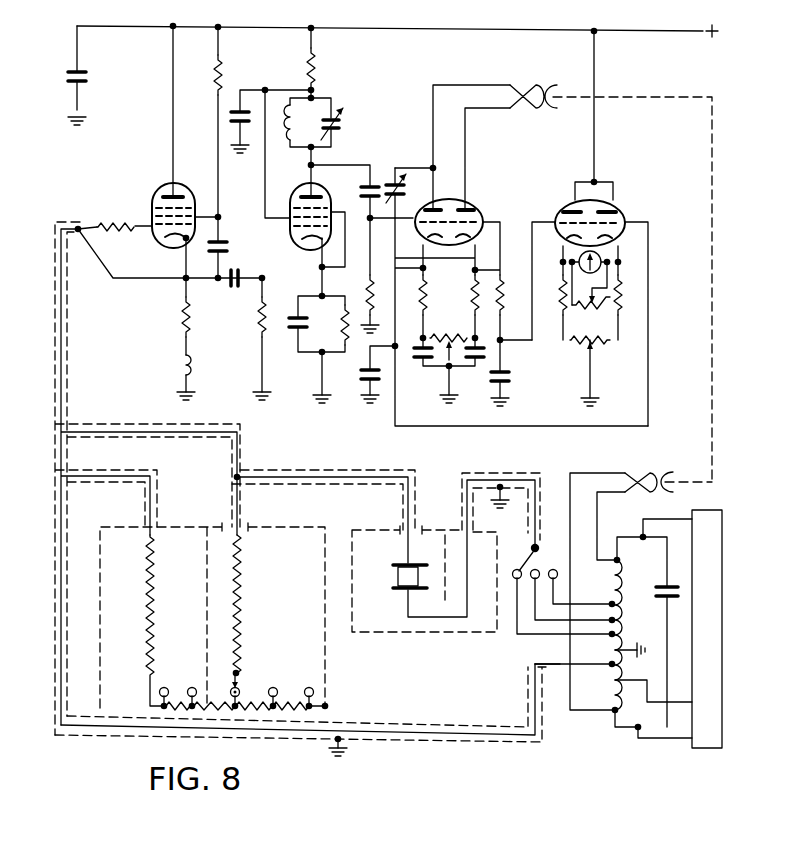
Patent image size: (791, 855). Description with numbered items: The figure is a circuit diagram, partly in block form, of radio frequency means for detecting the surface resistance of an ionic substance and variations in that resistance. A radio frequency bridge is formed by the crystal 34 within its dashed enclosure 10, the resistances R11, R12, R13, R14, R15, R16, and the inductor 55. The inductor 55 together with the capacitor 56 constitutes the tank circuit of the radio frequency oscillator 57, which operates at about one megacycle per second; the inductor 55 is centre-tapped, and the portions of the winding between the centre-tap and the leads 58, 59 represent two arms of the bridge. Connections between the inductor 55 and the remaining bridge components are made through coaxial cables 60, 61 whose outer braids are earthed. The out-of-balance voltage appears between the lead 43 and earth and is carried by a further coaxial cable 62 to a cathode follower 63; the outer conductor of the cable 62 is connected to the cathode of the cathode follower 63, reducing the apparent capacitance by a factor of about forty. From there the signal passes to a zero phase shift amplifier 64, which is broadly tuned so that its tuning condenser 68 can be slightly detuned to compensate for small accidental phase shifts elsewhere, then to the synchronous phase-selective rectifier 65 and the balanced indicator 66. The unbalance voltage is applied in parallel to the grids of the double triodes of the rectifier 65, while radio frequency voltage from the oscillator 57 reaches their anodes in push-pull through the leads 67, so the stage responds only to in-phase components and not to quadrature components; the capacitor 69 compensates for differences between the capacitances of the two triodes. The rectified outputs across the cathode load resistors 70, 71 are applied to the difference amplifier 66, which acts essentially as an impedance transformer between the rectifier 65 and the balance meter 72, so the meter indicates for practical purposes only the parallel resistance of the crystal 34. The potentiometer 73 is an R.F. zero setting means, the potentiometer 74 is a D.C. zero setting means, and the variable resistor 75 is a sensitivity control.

The detector unit (dashed enclosure) 10 is at (387, 633).
The crystal 34 is at (396, 574).
The lead 43 is at (241, 495).
The inductor 55 is at (607, 690).
The capacitor 56 is at (656, 591).
The radio frequency oscillator 57 is at (719, 646).
The lead 58 is at (558, 664).
The lead 59 is at (531, 548).
The coaxial cable 60 is at (418, 724).
The coaxial cable 61 is at (528, 520).
The coaxial cable 62 is at (208, 413).
The cathode follower 63 is at (162, 247).
The zero phase shift amplifier 64 is at (294, 250).
The synchronous phase-selective rectifier 65 is at (470, 199).
The balanced indicator 66 is at (618, 200).
The leads 67 is at (635, 473).
The tuning condenser 68 is at (338, 116).
The capacitor 69 is at (392, 178).
The cathode load resistor 70 is at (425, 278).
The cathode load resistor 71 is at (471, 302).
The balance meter 72 is at (610, 258).
The potentiometer 73 is at (464, 336).
The potentiometer 74 is at (599, 345).
The variable resistor 75 is at (601, 314).
The resistance R11 is at (238, 599).
The resistance R12 is at (150, 599).
The resistance R13 is at (182, 711).
The resistance R14 is at (218, 711).
The resistance R15 is at (260, 711).
The resistance R16 is at (300, 711).